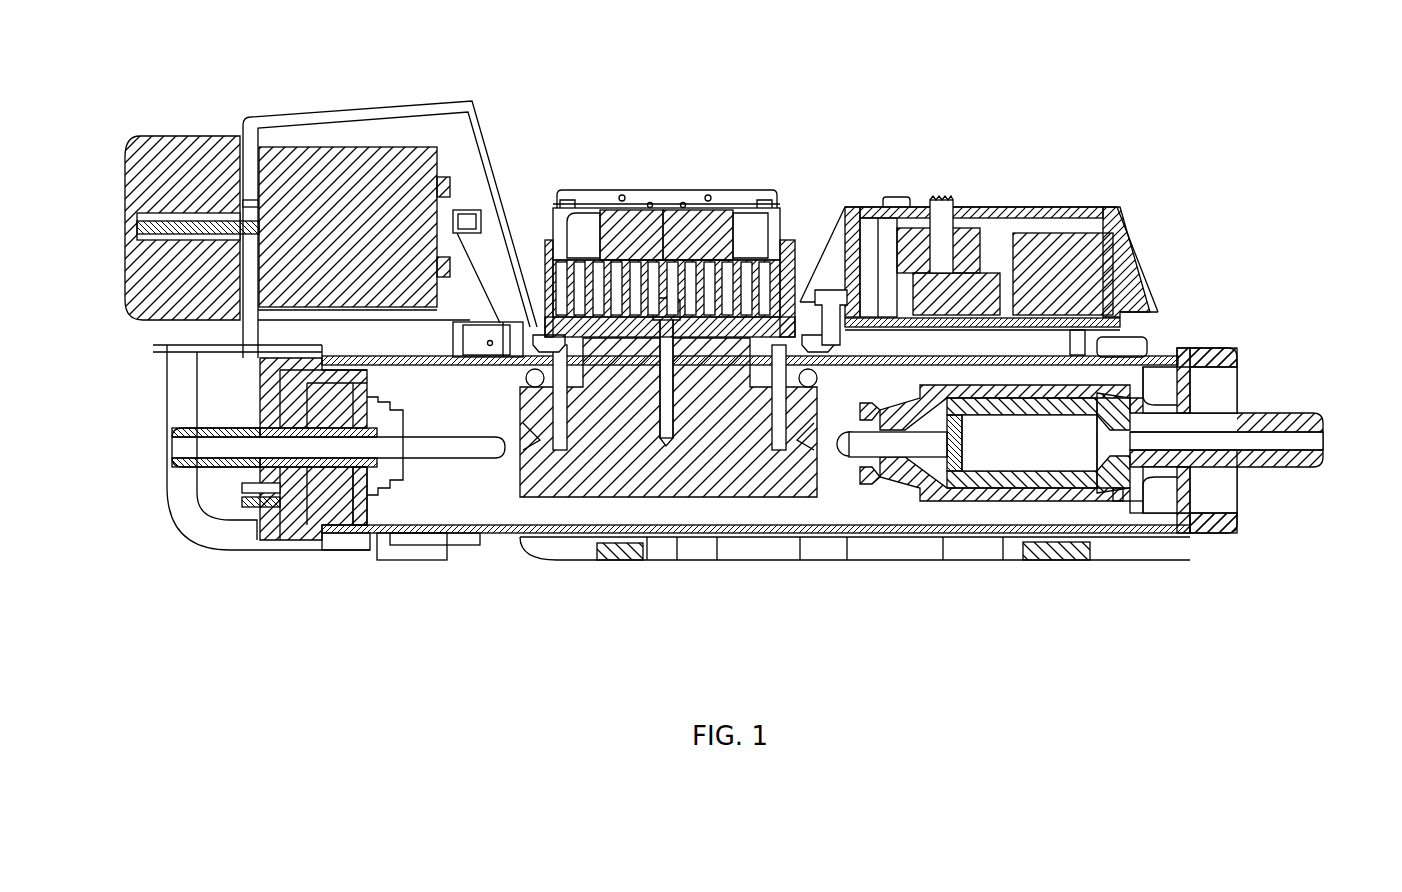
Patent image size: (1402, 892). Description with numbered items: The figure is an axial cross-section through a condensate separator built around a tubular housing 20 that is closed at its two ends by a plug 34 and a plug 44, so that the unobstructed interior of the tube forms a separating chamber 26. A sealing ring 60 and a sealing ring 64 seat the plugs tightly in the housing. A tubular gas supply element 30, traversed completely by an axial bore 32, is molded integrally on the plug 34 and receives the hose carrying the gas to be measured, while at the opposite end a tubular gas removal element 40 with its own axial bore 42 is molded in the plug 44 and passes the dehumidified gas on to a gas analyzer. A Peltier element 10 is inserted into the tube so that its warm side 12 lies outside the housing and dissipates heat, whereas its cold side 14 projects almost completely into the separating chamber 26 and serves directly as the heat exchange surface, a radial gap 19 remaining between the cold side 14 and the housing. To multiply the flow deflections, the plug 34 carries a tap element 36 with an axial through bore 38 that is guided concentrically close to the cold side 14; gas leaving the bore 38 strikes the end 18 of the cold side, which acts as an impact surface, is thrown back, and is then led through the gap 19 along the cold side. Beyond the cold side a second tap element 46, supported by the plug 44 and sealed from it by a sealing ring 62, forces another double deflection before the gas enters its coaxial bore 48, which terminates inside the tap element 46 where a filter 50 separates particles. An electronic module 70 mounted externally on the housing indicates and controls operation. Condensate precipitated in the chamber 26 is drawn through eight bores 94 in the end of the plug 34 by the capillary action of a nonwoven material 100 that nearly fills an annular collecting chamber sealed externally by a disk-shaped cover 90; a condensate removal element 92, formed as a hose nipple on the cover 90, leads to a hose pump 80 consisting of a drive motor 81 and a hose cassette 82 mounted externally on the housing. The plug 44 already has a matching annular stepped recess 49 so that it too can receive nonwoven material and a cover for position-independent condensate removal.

The Peltier element 10 is at (640, 180).
The warm side 12 is at (662, 272).
The cold side 14 is at (720, 437).
The end 18 is at (517, 492).
The radial gap 19 is at (650, 510).
The tubular housing 20 is at (540, 535).
The separating chamber 26 is at (833, 483).
The gas supply element 30 is at (180, 437).
The bore 32 is at (180, 456).
The plug 34 is at (282, 402).
The tap element 36 is at (420, 462).
The axial through bore 38 is at (470, 445).
The gas removal element 40 is at (1298, 425).
The bore 42 is at (1312, 452).
The plug 44 is at (1210, 357).
The tap element 46 is at (893, 447).
The bore 48 is at (940, 487).
The annular stepped recess 49 is at (1230, 497).
The filter 50 is at (1030, 472).
The sealing ring 60 is at (322, 512).
The sealing ring 62 is at (1113, 489).
The sealing ring 64 is at (1148, 525).
The electronic module 70 is at (979, 190).
The hose pump 80 is at (321, 197).
The drive motor 81 is at (330, 157).
The hose cassette 82 is at (177, 140).
The cover 90 is at (285, 410).
The condensate removal element 92 is at (245, 497).
The bores 94 is at (355, 505).
The nonwoven material 100 is at (305, 500).